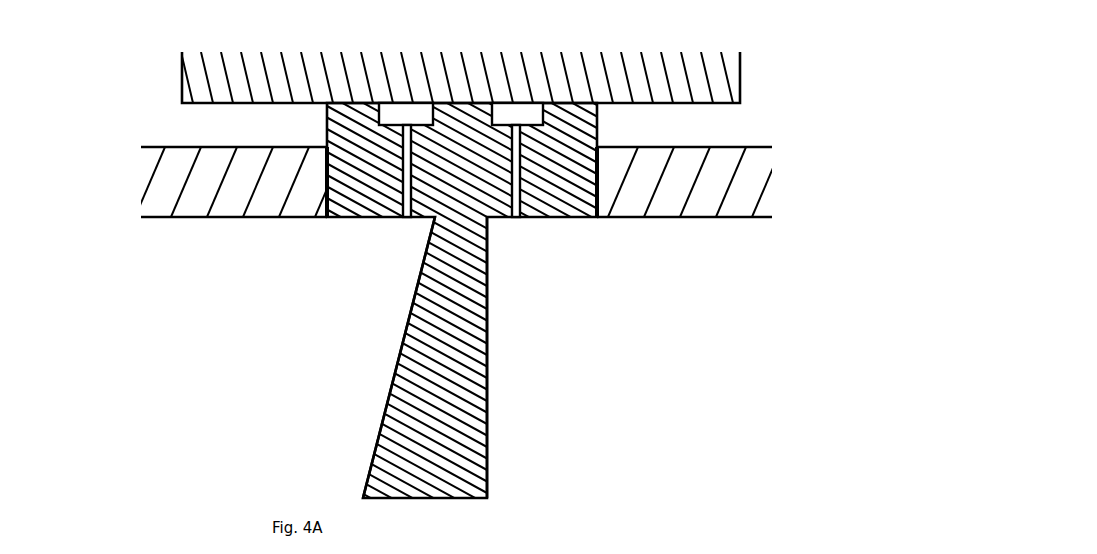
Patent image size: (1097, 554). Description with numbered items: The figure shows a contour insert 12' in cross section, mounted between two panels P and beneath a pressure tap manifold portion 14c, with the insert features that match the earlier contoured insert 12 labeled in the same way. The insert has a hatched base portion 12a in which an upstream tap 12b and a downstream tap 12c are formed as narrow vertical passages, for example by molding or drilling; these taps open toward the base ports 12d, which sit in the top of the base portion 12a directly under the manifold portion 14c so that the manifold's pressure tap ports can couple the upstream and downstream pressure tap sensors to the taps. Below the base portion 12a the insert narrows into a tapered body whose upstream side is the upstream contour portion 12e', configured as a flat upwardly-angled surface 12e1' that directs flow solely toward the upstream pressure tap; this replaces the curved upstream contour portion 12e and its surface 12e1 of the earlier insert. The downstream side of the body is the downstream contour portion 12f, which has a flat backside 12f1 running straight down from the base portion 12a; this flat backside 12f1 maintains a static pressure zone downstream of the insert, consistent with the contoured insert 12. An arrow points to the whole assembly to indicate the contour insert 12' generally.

The pressure tap manifold portion 14c is at (740, 90).
The panel P is at (195, 217).
The contour insert 12' is at (580, 277).
The contoured insert 12 is at (580, 277).
The base ports 12d is at (543, 120).
The base portion 12a is at (342, 217).
The upstream tap 12b is at (398, 217).
The downstream tap 12c is at (527, 217).
The upstream contour portion 12e' is at (357, 303).
The inclined surface 12e is at (357, 303).
The flat upwardly-angled surface 12e1' is at (336, 416).
The inclined surface portion 12e1 is at (336, 416).
The downstream contour portion 12f is at (520, 292).
The flat backside 12f1 is at (487, 338).